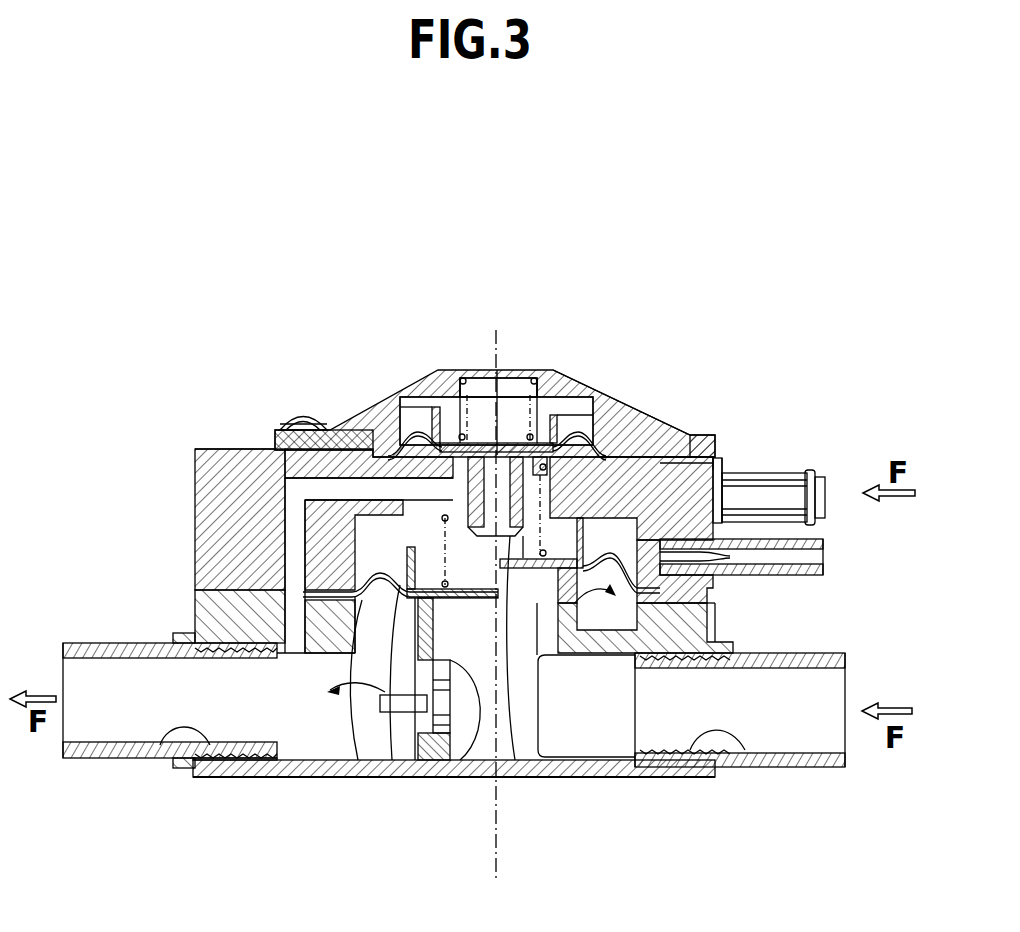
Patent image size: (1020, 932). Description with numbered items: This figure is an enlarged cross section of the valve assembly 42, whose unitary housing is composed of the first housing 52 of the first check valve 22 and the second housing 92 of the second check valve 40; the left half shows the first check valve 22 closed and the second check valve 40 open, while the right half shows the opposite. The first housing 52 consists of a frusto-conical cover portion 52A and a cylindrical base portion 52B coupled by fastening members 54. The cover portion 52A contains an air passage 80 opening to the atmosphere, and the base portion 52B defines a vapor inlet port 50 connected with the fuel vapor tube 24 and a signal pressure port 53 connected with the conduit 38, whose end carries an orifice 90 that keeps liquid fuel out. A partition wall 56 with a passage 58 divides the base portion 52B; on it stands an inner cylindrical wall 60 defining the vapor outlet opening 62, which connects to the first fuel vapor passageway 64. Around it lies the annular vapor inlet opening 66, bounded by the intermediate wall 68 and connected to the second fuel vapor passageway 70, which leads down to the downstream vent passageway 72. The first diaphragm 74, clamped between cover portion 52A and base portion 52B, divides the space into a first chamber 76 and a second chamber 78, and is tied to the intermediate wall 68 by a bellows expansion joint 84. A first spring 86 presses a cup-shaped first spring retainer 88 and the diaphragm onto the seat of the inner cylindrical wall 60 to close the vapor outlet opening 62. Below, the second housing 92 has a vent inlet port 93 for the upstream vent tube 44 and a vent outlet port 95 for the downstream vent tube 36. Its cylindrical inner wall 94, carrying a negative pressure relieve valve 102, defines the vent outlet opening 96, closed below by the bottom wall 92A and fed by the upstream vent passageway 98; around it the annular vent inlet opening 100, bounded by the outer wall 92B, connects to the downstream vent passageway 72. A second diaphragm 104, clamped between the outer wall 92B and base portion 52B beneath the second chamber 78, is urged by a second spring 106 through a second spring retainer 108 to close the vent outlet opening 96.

The first check valve 22 is at (516, 350).
The fuel vapor tube 24 is at (825, 500).
The downstream vent tube 36 is at (101, 758).
The conduit 38 is at (823, 568).
The second check valve 40 is at (324, 794).
The valve assembly 42 is at (470, 276).
The upstream vent tube 44 is at (791, 763).
The vapor inlet port 50 is at (781, 498).
The first housing 52 is at (183, 461).
The cover portion 52A is at (313, 392).
The base portion 52B is at (221, 447).
The signal pressure port 53 is at (720, 600).
The fastening members 54 is at (299, 412).
The partition wall 56 is at (373, 396).
The passage 58 is at (702, 462).
The inner cylindrical wall 60 is at (401, 426).
The vapor outlet opening 62 is at (526, 368).
The first fuel vapor passageway 64 is at (761, 478).
The annular vapor inlet opening 66 is at (490, 372).
The intermediate wall 68 is at (405, 370).
The second fuel vapor passageway 70 is at (291, 471).
The downstream vent passageway 72 is at (314, 737).
The first diaphragm 74 is at (641, 452).
The first chamber 76 is at (606, 425).
The second chamber 78 is at (691, 447).
The air passage 80 is at (651, 432).
The bellows expansion joint 84 is at (419, 368).
The first spring 86 is at (556, 400).
The first spring retainer 88 is at (440, 368).
The orifice 90 is at (721, 570).
The second housing 92 is at (668, 781).
The bottom wall 92A is at (546, 779).
The outer wall 92B is at (192, 616).
The vent inlet port 93 is at (701, 726).
The cylindrical inner wall 94 is at (401, 766).
The vent outlet port 95 is at (181, 746).
The vent outlet opening 96 is at (521, 690).
The upstream vent passageway 98 is at (600, 737).
The annular vent inlet opening 100 is at (341, 629).
The negative pressure relieve valve 102 is at (466, 763).
The second diaphragm 104 is at (401, 583).
The second spring 106 is at (440, 600).
The second spring retainer 108 is at (356, 523).